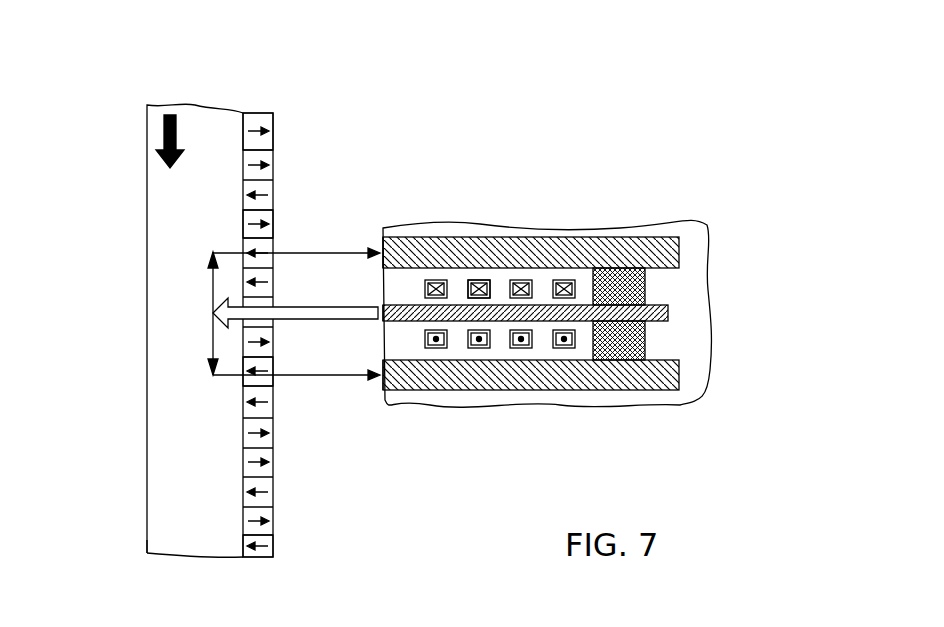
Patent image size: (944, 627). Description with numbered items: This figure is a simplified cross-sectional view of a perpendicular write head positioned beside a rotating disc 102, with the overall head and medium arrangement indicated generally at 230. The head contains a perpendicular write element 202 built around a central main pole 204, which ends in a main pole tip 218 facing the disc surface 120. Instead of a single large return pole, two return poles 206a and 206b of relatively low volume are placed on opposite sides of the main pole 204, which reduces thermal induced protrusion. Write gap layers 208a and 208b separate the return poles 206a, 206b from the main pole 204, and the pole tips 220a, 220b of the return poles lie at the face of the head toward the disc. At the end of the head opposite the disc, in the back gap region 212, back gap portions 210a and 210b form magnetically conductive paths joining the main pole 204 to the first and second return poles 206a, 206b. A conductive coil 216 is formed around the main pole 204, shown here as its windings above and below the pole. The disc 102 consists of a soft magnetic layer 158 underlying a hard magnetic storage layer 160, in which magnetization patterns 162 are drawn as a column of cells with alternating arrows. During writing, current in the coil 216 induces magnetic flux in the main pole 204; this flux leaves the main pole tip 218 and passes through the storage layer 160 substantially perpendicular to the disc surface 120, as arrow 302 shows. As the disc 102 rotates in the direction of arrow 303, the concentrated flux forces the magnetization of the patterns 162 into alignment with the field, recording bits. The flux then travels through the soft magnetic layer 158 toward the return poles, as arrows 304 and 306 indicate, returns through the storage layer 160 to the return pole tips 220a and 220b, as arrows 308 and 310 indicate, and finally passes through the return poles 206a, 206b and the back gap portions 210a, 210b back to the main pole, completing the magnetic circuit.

The disc 102 is at (216, 108).
The disc surface 120 is at (273, 528).
The soft magnetic layer 158 is at (147, 538).
The storage layer 160 is at (265, 558).
The patterns 162 is at (258, 122).
The perpendicular write element 202 is at (647, 184).
The main pole 204 is at (668, 313).
The first return pole 206a is at (543, 247).
The second return pole 206b is at (510, 380).
The write gap layer 208a is at (405, 280).
The write gap layer 208b is at (405, 350).
The back gap portion 210a is at (645, 280).
The back gap portion 210b is at (645, 343).
The back gap region 212 is at (692, 290).
The conductive coil 216 is at (479, 281).
The main pole tip 218 is at (378, 322).
The return pole tip 220a is at (372, 240).
The return pole tip 220b is at (383, 388).
The recording system 230 is at (754, 147).
The arrow 302 is at (213, 313).
The arrow 303 is at (160, 132).
The arrow 304 is at (213, 290).
The arrow 306 is at (213, 335).
The arrow 308 is at (287, 243).
The arrow 310 is at (302, 386).